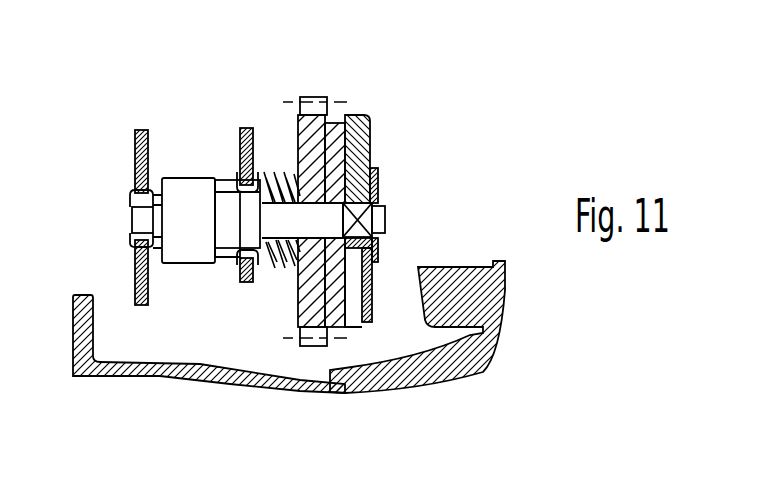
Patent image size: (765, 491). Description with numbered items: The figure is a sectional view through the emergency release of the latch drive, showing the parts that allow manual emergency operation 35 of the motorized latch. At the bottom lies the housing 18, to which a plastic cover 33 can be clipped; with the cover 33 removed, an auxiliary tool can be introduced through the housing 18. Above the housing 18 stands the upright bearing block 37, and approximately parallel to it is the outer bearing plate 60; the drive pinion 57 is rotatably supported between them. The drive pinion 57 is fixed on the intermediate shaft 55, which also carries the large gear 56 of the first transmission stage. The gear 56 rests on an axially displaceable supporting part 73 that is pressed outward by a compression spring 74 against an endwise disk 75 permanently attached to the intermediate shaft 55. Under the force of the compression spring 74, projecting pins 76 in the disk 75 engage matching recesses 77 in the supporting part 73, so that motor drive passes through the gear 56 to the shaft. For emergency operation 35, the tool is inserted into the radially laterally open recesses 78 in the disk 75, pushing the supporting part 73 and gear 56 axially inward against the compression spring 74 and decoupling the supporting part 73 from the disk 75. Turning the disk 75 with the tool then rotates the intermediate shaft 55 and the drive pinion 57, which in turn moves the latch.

The housing 18 is at (220, 388).
The plastic cover 33 is at (422, 372).
The manual emergency operation 35 is at (383, 79).
The bearing block 37 is at (135, 140).
The intermediate shaft 55 is at (132, 212).
The gear 56 is at (291, 97).
The drive pinion 57 is at (185, 250).
The bearing plate 60 is at (242, 135).
The supporting part 73 is at (323, 306).
The compression spring 74 is at (275, 168).
The disk 75 is at (383, 128).
The projecting pin 76 is at (355, 118).
The recess 77 is at (313, 125).
The radially laterally open recess 78 is at (353, 318).